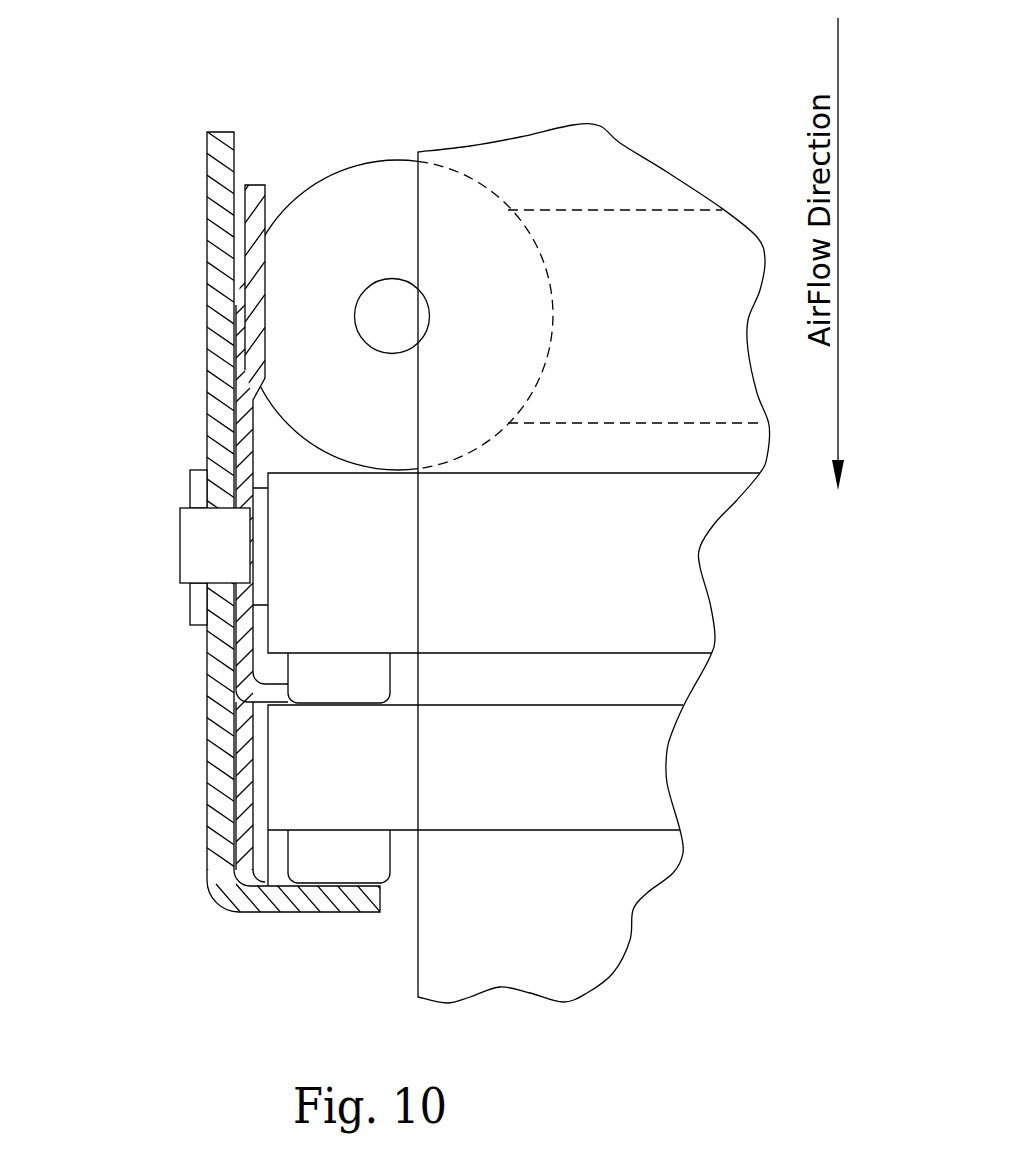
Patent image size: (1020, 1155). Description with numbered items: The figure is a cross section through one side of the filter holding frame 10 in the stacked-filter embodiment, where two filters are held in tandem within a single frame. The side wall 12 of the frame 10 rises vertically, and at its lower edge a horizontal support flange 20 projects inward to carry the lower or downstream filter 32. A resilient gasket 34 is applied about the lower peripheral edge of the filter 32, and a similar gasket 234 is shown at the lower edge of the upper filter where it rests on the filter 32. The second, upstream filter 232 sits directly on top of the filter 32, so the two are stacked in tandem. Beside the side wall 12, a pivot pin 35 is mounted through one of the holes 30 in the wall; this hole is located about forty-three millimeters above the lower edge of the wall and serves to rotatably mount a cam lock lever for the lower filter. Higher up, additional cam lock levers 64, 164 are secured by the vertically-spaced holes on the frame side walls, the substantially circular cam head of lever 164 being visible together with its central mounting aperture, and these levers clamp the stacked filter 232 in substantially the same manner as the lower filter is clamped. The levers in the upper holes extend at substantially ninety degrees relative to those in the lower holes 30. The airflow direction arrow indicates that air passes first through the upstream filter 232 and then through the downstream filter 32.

The filter holding frame 10 is at (231, 543).
The side wall 12 is at (207, 249).
The horizontal support flange 20 is at (330, 905).
The hole 30 is at (218, 508).
The filter 32 is at (582, 694).
The resilient gasket 34 is at (343, 847).
The pivot pin 35 is at (190, 543).
The cam lock lever 64 is at (288, 285).
The cam lock lever 164 is at (386, 150).
The stacked filter 232 is at (640, 455).
The upper recess 234 is at (358, 675).